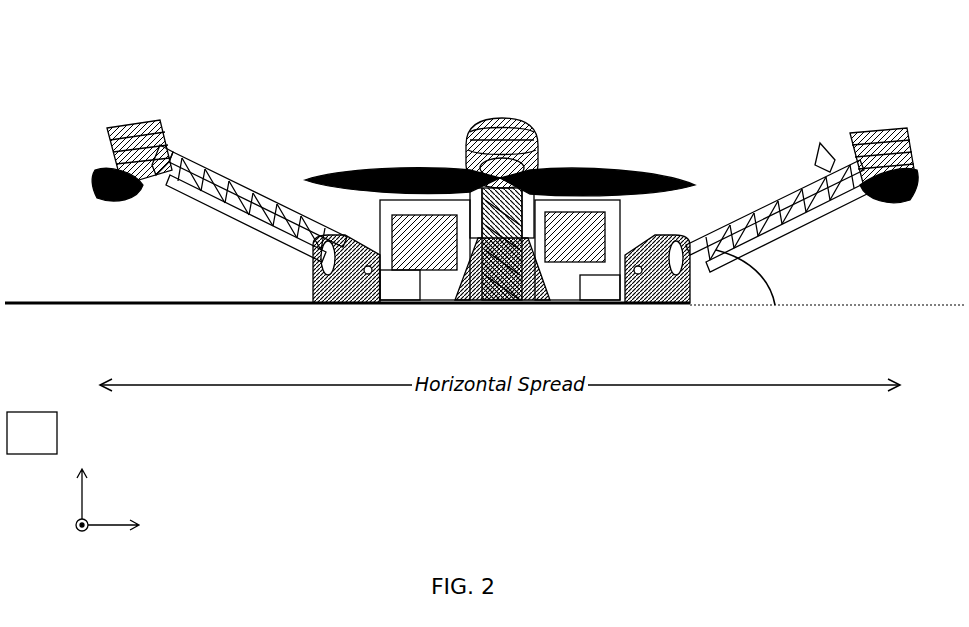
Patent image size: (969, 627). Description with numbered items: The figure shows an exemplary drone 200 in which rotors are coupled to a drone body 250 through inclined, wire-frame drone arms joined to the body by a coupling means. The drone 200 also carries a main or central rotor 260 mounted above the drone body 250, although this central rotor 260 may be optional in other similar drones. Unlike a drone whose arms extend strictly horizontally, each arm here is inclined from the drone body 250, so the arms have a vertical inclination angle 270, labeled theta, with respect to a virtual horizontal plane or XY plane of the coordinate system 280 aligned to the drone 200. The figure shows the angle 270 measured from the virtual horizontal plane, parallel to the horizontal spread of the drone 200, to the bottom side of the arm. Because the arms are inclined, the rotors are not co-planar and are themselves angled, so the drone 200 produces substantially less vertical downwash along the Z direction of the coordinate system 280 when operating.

The drone 200 is at (51, 27).
The drone body 250 is at (612, 298).
The central rotor 260 is at (632, 173).
The inclination angle 270 is at (768, 270).
The coordinate system 280 is at (86, 482).